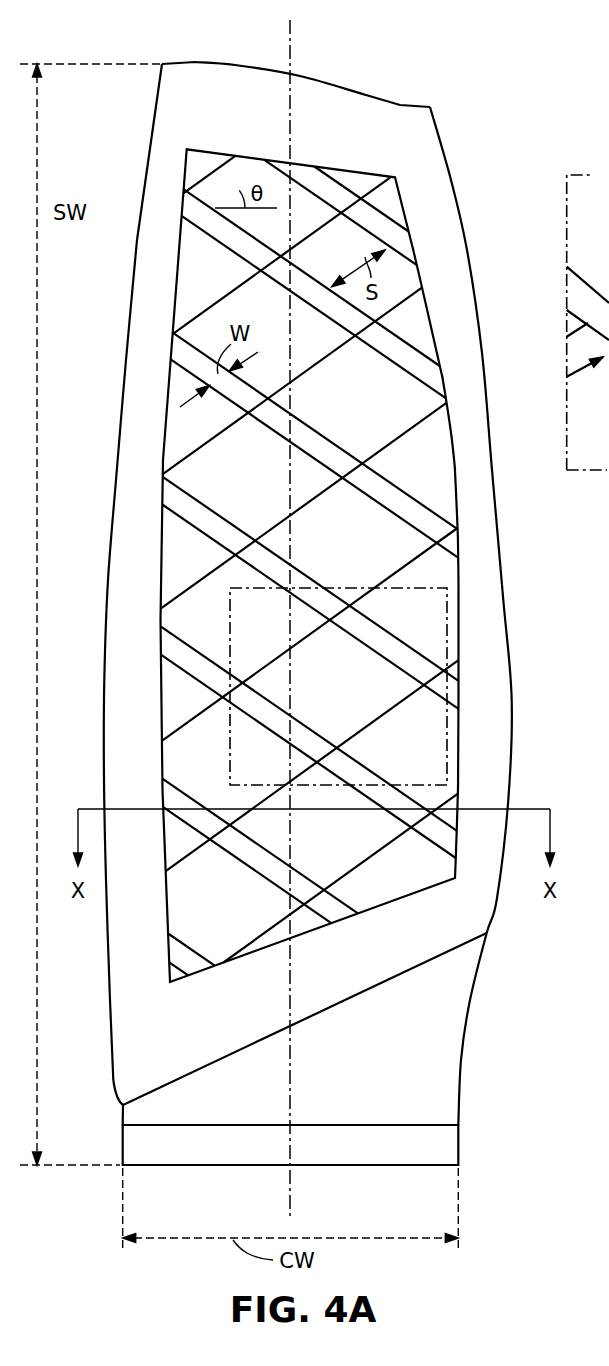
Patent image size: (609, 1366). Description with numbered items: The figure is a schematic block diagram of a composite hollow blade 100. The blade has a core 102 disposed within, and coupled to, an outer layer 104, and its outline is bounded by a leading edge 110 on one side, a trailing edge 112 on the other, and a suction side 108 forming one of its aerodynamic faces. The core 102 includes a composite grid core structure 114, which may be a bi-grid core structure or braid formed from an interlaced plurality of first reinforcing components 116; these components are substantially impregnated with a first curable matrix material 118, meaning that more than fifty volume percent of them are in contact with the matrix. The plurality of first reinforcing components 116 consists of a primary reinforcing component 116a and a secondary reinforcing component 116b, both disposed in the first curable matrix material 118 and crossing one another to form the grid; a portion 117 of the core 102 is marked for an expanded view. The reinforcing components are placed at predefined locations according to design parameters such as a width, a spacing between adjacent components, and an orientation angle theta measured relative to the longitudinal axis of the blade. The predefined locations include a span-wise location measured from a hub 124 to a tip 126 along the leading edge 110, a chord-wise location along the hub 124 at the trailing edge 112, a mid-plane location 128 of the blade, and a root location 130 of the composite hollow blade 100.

The composite hollow blade 100 is at (406, 83).
The core 102 is at (463, 757).
The outer layer 104 is at (146, 122).
The suction side 108 is at (372, 963).
The leading edge 110 is at (126, 368).
The trailing edge 112 is at (512, 637).
The composite grid core structure 114 is at (221, 147).
The plurality of first reinforcing components 116 is at (192, 520).
The primary reinforcing component 116a is at (193, 447).
The secondary reinforcing component 116b is at (262, 871).
The portion 117 is at (345, 588).
The first curable matrix material 118 is at (398, 507).
The hub 124 is at (290, 1025).
The tip 126 is at (207, 63).
The mid-plane location 128 is at (293, 1097).
The root location 130 is at (360, 1167).